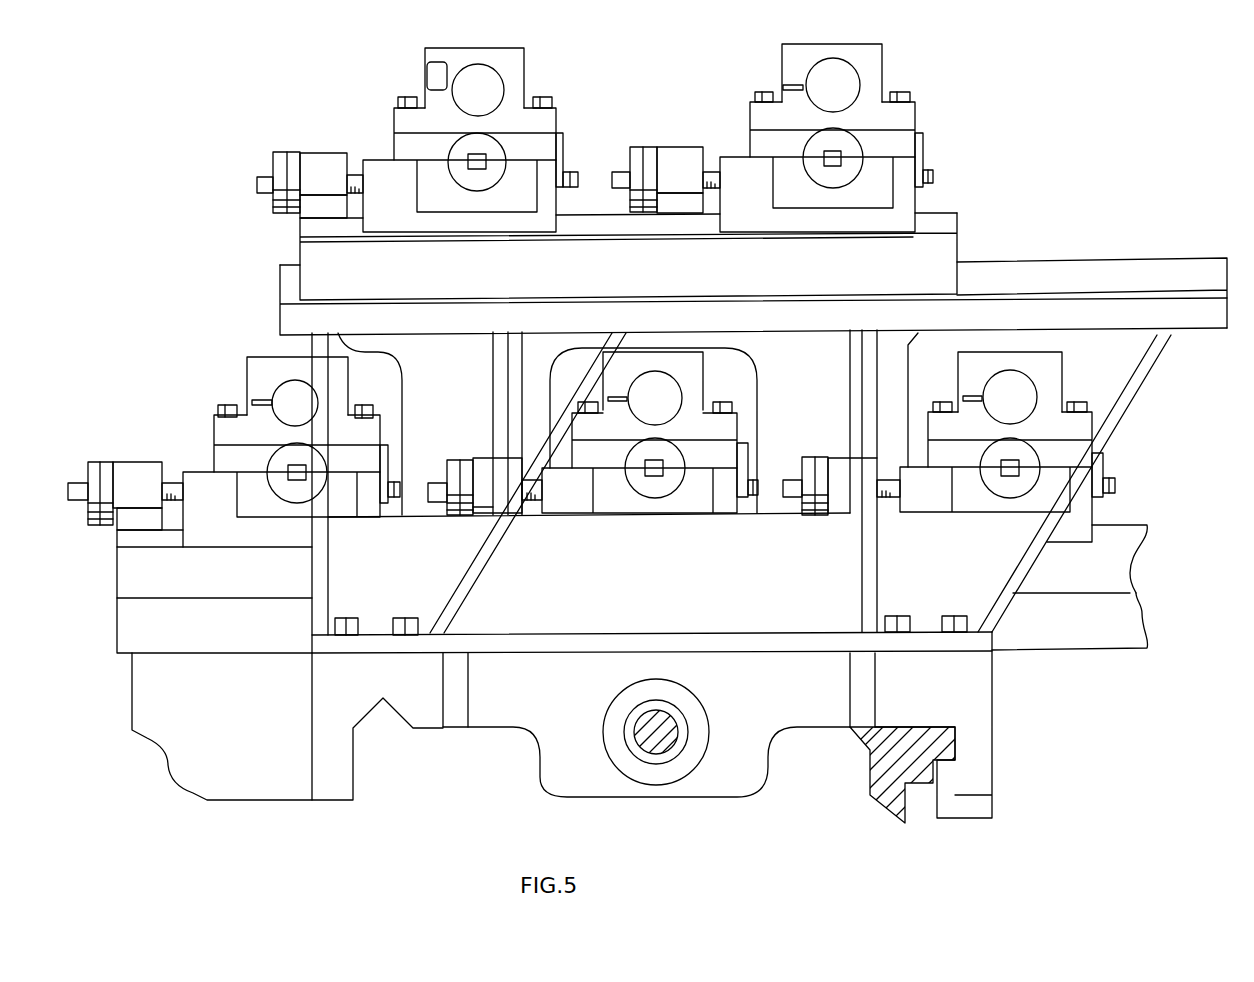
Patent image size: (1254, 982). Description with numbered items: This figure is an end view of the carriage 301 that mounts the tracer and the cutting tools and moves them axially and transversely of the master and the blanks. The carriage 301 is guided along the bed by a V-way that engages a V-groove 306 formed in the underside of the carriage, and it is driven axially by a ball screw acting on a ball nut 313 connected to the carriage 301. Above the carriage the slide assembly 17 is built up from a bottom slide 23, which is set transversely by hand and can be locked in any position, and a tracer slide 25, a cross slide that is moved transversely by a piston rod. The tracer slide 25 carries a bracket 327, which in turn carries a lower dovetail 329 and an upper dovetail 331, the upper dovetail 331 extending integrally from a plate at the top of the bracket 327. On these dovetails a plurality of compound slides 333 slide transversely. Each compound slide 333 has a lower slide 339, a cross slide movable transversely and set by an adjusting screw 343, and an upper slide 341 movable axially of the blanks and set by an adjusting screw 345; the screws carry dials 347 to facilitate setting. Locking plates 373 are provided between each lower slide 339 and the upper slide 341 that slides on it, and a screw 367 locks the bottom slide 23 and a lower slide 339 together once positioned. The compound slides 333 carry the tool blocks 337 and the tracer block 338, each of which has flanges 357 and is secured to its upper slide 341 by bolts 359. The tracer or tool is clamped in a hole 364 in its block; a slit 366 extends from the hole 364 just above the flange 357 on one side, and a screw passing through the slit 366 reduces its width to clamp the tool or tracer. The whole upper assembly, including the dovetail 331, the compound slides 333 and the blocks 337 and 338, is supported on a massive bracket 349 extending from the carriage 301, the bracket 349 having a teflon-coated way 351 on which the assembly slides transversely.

The slide assembly 17 is at (250, 335).
The bottom slide 23 is at (135, 630).
The tracer slide 25 is at (133, 582).
The carriage 301 is at (983, 698).
The V-groove 306 is at (402, 722).
The ball nut 313 is at (657, 772).
The bracket 327 is at (500, 398).
The dovetail 329 is at (130, 540).
The dovetail 331 is at (310, 228).
The compound slide 333 is at (743, 153).
The tool block 337 is at (512, 60).
The tracer block 338 is at (876, 61).
The lower slide 339 is at (374, 170).
The upper slide 341 is at (533, 148).
The adjusting screw 343 is at (258, 176).
The adjusting screw 345 is at (478, 153).
The dial 347 is at (282, 152).
The bracket 349 is at (1143, 365).
The way 351 is at (1182, 267).
The flange 357 is at (900, 120).
The bolt 359 is at (545, 92).
The hole 364 is at (474, 84).
The slit 366 is at (427, 63).
The screw 367 is at (1117, 485).
The locking plate 373 is at (927, 148).